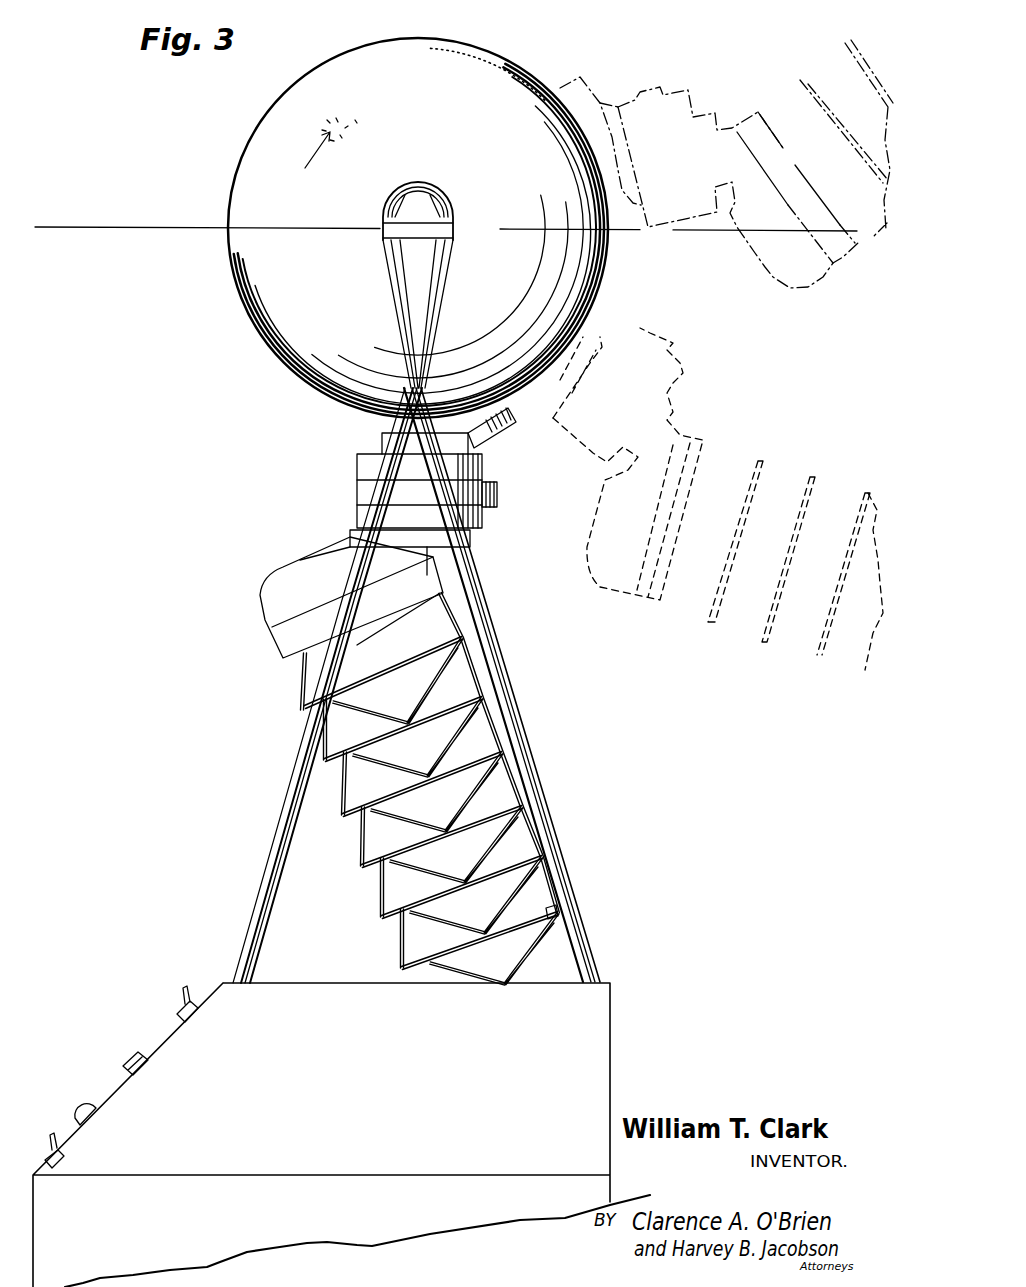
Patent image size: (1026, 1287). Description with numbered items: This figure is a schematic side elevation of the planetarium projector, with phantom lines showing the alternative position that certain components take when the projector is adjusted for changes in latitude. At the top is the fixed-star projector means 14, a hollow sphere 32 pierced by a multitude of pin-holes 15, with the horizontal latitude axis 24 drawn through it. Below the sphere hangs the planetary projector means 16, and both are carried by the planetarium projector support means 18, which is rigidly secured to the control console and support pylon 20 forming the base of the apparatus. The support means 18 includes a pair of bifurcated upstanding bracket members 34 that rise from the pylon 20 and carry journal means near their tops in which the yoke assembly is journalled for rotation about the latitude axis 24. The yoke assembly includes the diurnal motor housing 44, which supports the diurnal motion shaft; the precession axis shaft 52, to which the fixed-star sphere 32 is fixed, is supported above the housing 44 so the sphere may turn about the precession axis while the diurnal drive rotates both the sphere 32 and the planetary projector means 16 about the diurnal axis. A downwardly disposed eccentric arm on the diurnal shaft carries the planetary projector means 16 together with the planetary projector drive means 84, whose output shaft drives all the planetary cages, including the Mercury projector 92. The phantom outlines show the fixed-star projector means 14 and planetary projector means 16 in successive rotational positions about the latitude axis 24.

The fixed-star projector means 14 is at (552, 53).
The pin-holes 15 is at (324, 146).
The planetary projector means 16 is at (280, 686).
The planetarium projector support means 18 is at (459, 298).
The control console and support pylon 20 is at (643, 1068).
The latitude axis 24 is at (432, 234).
The hollow sphere 32 is at (266, 340).
The bifurcated upstanding bracket members 34 is at (534, 720).
The diurnal motor housing 44 is at (480, 518).
The precession axis shaft 52 is at (514, 408).
The planetary projector drive means 84 is at (275, 600).
The Mercury projector 92 is at (462, 548).